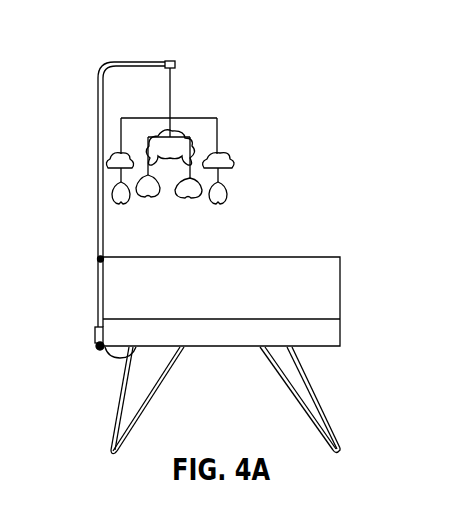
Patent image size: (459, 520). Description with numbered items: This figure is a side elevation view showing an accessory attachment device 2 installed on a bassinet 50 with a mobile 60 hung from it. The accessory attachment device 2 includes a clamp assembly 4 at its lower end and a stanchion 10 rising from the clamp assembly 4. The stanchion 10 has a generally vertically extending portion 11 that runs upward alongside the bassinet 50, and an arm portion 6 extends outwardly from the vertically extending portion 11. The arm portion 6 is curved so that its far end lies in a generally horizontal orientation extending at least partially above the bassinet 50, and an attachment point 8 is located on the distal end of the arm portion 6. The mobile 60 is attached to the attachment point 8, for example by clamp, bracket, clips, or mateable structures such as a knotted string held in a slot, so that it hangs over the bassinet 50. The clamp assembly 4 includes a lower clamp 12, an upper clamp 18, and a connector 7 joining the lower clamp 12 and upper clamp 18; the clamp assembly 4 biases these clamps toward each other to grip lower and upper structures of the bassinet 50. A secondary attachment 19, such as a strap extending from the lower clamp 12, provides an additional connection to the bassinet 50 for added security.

The accessory attachment device 2 is at (86, 89).
The clamp assembly 4 is at (84, 314).
The arm portion 6 is at (114, 57).
The connector 7 is at (97, 290).
The attachment point 8 is at (176, 61).
The stanchion 10 is at (97, 188).
The vertically extending portion 11 is at (90, 171).
The lower clamp 12 is at (95, 348).
The upper clamp 18 is at (97, 260).
The secondary attachment 19 is at (109, 372).
The bassinet 50 is at (338, 266).
The mobile 60 is at (209, 118).